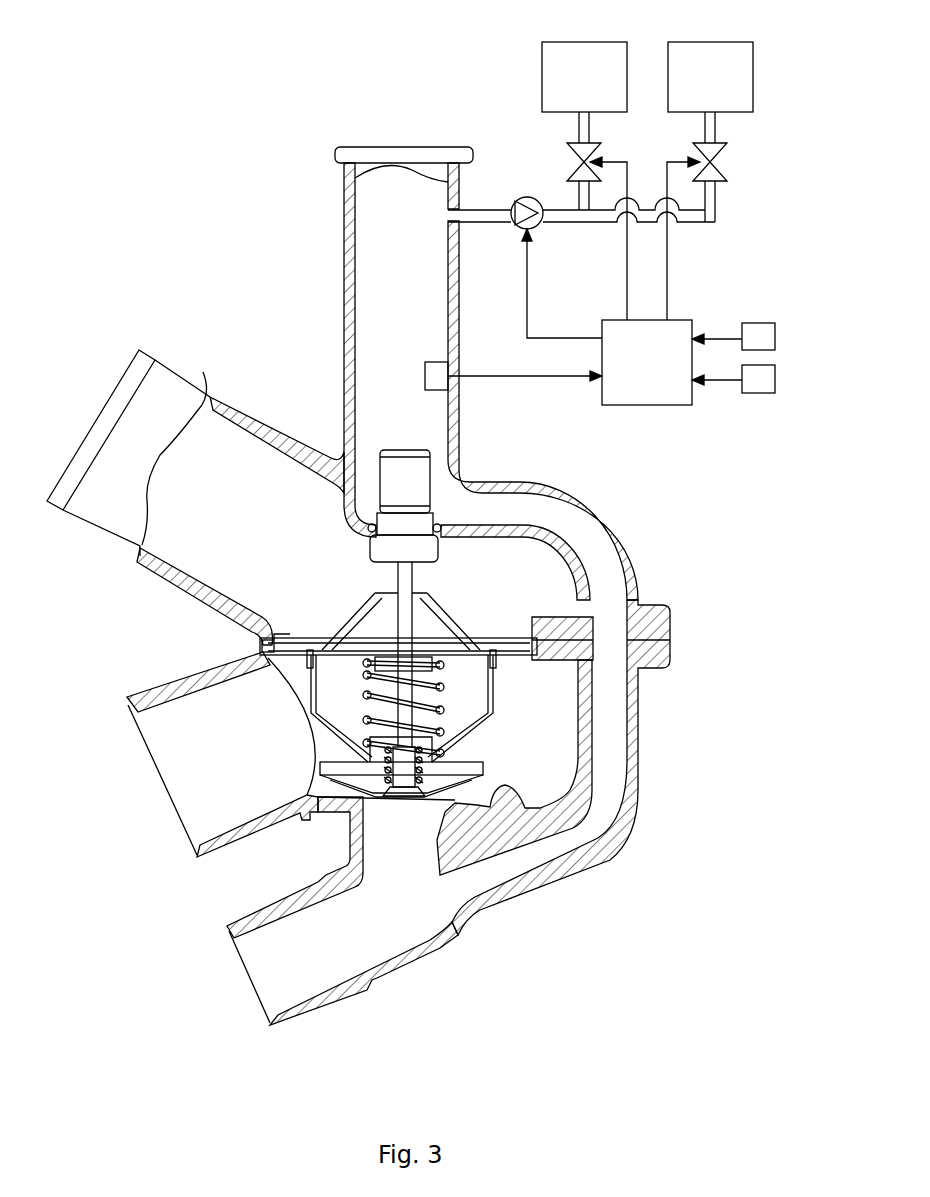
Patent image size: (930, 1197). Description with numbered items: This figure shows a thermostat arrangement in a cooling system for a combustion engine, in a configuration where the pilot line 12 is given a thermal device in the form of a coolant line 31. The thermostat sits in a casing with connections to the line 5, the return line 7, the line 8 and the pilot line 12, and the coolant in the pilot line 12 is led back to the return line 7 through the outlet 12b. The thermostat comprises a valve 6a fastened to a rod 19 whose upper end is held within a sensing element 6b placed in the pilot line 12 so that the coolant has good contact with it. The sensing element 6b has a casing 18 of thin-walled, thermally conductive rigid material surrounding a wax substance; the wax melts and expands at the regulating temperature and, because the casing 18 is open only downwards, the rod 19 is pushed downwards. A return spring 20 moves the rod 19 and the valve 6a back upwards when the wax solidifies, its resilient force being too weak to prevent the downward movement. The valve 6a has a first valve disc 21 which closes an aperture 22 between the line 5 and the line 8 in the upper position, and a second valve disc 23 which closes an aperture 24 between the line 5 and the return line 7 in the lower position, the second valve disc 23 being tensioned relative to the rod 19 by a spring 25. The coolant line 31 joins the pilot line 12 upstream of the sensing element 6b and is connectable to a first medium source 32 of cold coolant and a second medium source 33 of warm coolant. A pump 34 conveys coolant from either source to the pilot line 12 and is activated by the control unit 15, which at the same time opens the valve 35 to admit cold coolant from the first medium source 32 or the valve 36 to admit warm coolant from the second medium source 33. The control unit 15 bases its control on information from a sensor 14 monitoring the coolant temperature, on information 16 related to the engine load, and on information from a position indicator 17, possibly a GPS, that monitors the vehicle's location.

The line 5 is at (200, 747).
The valve 6a is at (470, 610).
The sensing element 6b is at (360, 490).
The return line 7 is at (308, 957).
The line 8 is at (198, 513).
The pilot line 12 is at (385, 318).
The outlet 12b is at (447, 888).
The sensor 14 is at (437, 378).
The control unit 15 is at (650, 393).
The information related to engine load 16 is at (760, 333).
The position indicator 17 is at (760, 383).
The casing 18 is at (405, 488).
The rod 19 is at (403, 608).
The return spring 20 is at (372, 703).
The first valve disc 21 is at (313, 637).
The aperture 22 is at (287, 647).
The second valve disc 23 is at (487, 767).
The aperture 24 is at (372, 798).
The spring 25 is at (430, 755).
The coolant line 31 is at (482, 215).
The first medium source 32 is at (555, 58).
The second medium source 33 is at (735, 57).
The pump 34 is at (523, 212).
The valve 35 is at (590, 155).
The valve 36 is at (715, 152).